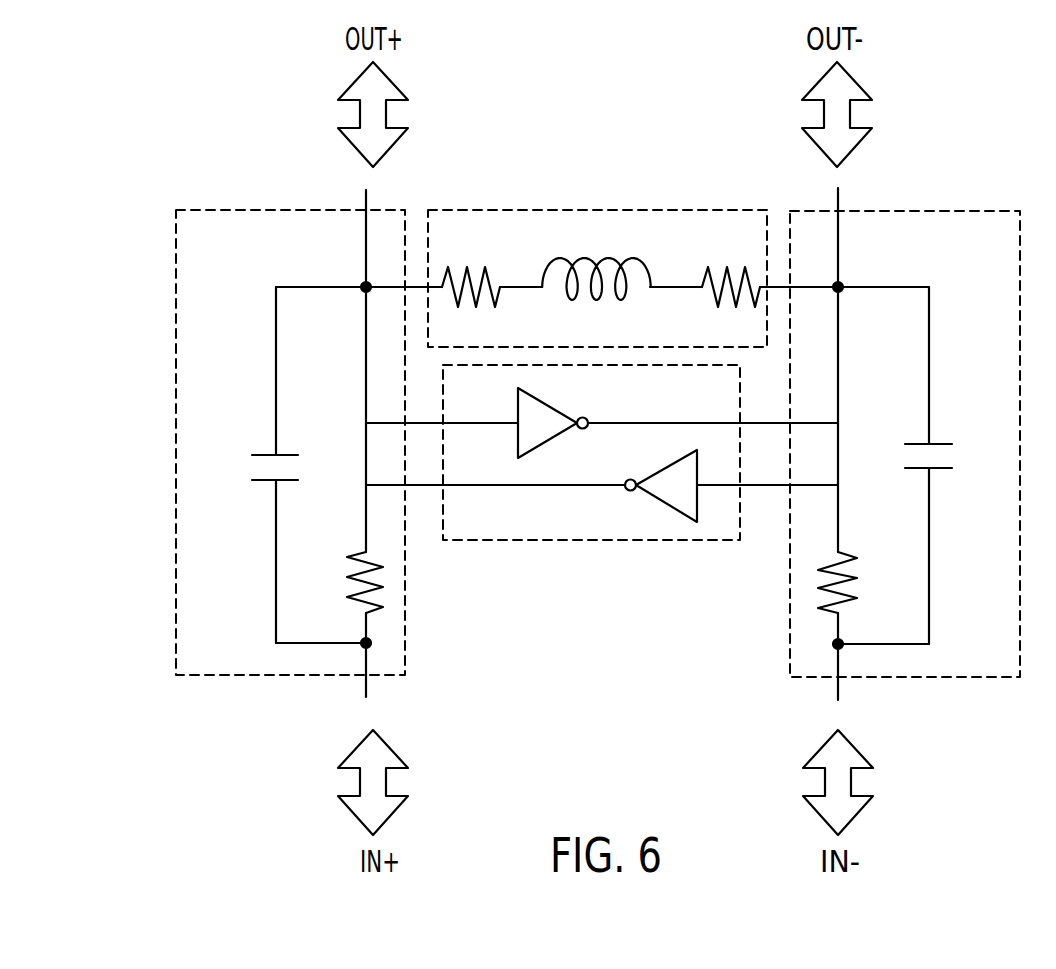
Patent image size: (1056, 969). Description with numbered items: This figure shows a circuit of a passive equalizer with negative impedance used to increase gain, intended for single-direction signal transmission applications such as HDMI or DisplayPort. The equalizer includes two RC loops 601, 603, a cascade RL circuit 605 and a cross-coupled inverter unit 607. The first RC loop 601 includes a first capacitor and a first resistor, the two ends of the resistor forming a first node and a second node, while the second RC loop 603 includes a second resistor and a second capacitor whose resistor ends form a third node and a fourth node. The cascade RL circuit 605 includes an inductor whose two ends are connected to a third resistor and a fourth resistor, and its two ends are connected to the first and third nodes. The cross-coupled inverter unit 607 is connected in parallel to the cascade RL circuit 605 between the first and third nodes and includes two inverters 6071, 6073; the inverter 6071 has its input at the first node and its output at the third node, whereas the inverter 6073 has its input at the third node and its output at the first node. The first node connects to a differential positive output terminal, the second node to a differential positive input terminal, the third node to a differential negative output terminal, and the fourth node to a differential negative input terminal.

The RC loop 601 is at (226, 677).
The RC loop 603 is at (968, 677).
The cascade RL circuit 605 is at (500, 210).
The cross-coupled inverter unit 607 is at (602, 481).
The inverter 6071 is at (602, 418).
The inverter 6073 is at (602, 482).